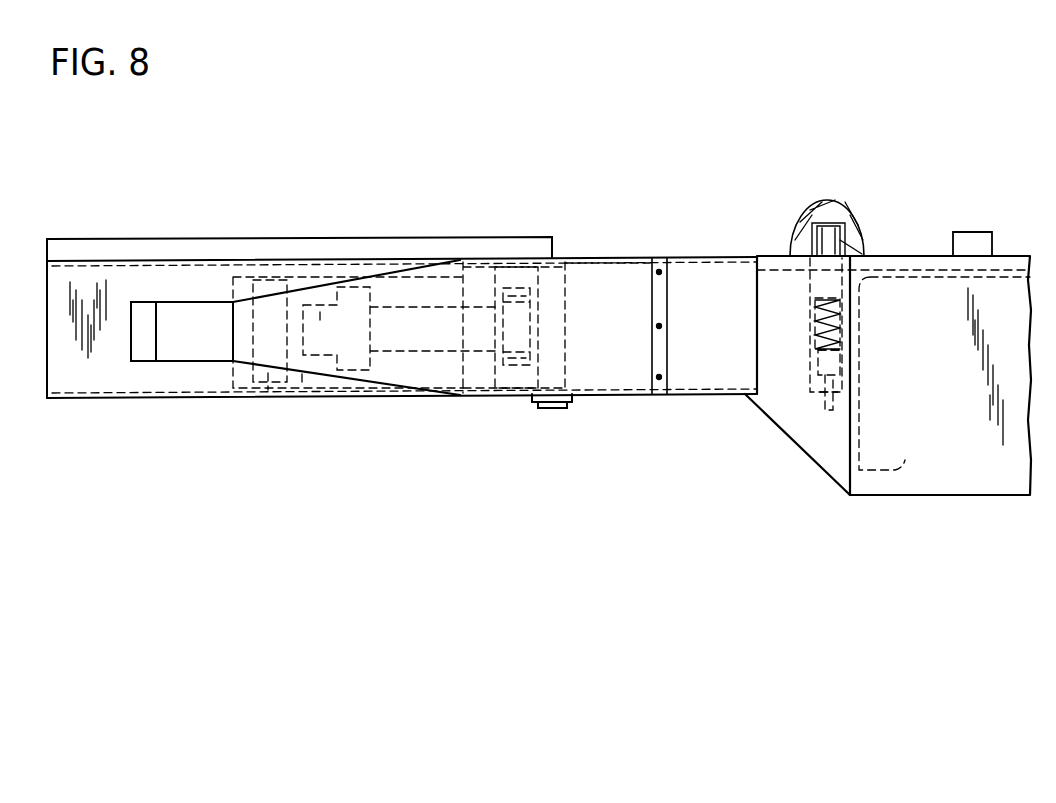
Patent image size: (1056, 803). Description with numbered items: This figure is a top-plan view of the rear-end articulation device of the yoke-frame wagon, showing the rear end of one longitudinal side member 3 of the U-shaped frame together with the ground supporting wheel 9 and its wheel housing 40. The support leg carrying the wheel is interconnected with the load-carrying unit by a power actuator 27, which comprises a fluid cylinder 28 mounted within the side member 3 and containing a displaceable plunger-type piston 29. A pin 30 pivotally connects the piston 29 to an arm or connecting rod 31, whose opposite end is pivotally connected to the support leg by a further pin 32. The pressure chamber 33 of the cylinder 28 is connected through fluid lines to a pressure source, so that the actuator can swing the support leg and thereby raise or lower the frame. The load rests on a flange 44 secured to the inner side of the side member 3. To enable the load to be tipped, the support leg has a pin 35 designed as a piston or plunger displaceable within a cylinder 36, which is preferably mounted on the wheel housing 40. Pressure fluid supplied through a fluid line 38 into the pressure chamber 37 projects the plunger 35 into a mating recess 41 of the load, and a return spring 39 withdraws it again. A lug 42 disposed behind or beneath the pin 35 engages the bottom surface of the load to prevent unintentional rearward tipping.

The side member 3 is at (400, 400).
The ground supporting wheel 9 is at (846, 478).
The power actuator 27 is at (265, 275).
The fluid cylinder 28 is at (237, 387).
The piston 29 is at (310, 395).
The pin 30 is at (317, 262).
The connecting rod 31 is at (478, 333).
The pin 32 is at (558, 368).
The pressure chamber 33 is at (266, 387).
The pin 35 is at (845, 242).
The cylinder 36 is at (810, 296).
The pressure chamber 37 is at (860, 368).
The fluid line 38 is at (825, 405).
The return spring 39 is at (858, 325).
The wheel housing 40 is at (850, 445).
The recess 41 is at (800, 232).
The lug 42 is at (965, 235).
The flange 44 is at (385, 247).